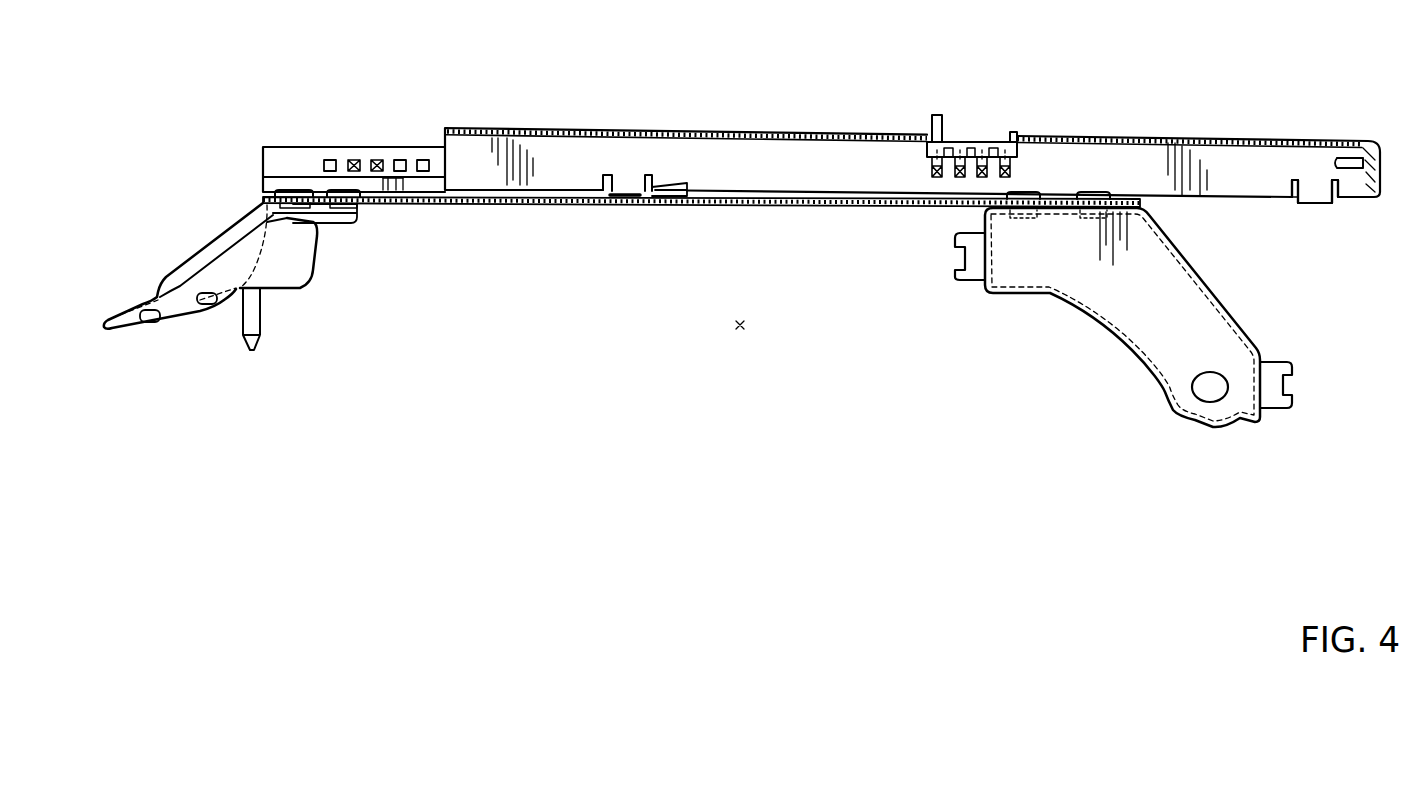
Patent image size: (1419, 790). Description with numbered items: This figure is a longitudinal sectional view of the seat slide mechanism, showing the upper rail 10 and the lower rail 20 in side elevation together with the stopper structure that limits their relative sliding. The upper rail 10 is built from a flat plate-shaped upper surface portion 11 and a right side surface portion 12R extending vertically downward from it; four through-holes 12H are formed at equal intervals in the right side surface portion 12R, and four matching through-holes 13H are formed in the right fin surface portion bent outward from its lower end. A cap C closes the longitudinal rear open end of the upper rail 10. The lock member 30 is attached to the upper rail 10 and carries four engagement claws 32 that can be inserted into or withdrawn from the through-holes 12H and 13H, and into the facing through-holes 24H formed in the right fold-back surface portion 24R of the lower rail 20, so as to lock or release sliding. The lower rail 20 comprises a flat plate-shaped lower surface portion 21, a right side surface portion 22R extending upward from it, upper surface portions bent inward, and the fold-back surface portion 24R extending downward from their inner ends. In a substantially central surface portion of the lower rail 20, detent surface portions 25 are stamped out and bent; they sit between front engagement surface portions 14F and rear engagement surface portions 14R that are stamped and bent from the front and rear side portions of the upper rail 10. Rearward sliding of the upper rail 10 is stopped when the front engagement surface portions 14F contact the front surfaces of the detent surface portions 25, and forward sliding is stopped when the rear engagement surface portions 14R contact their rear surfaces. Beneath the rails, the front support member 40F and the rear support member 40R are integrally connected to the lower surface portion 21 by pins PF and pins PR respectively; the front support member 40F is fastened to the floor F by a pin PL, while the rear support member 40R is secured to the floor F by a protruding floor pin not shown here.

The upper rail 10 is at (745, 152).
The upper surface portion 11 is at (660, 126).
The right side surface portion 12R is at (573, 150).
The front engagement surface portions 14F is at (630, 192).
The rear engagement surface portions 14R is at (1313, 199).
The lower rail 20 is at (298, 150).
The lower surface portion 21 is at (800, 205).
The right side surface portion 22R is at (418, 193).
The right fold-back surface portion 24R is at (347, 150).
The through-holes 24H is at (378, 160).
The detent surface portions 25 is at (670, 197).
The lock member 30 is at (935, 112).
The engagement claws 32 is at (1005, 179).
The through-holes 12H is at (1005, 150).
The through-holes 13H is at (990, 86).
The cap C is at (1376, 158).
The floor F is at (744, 325).
The pins PF is at (347, 199).
The pins PR is at (1092, 212).
The front support member 40F is at (288, 263).
The rear support member 40R is at (1128, 302).
The pin PL is at (256, 312).